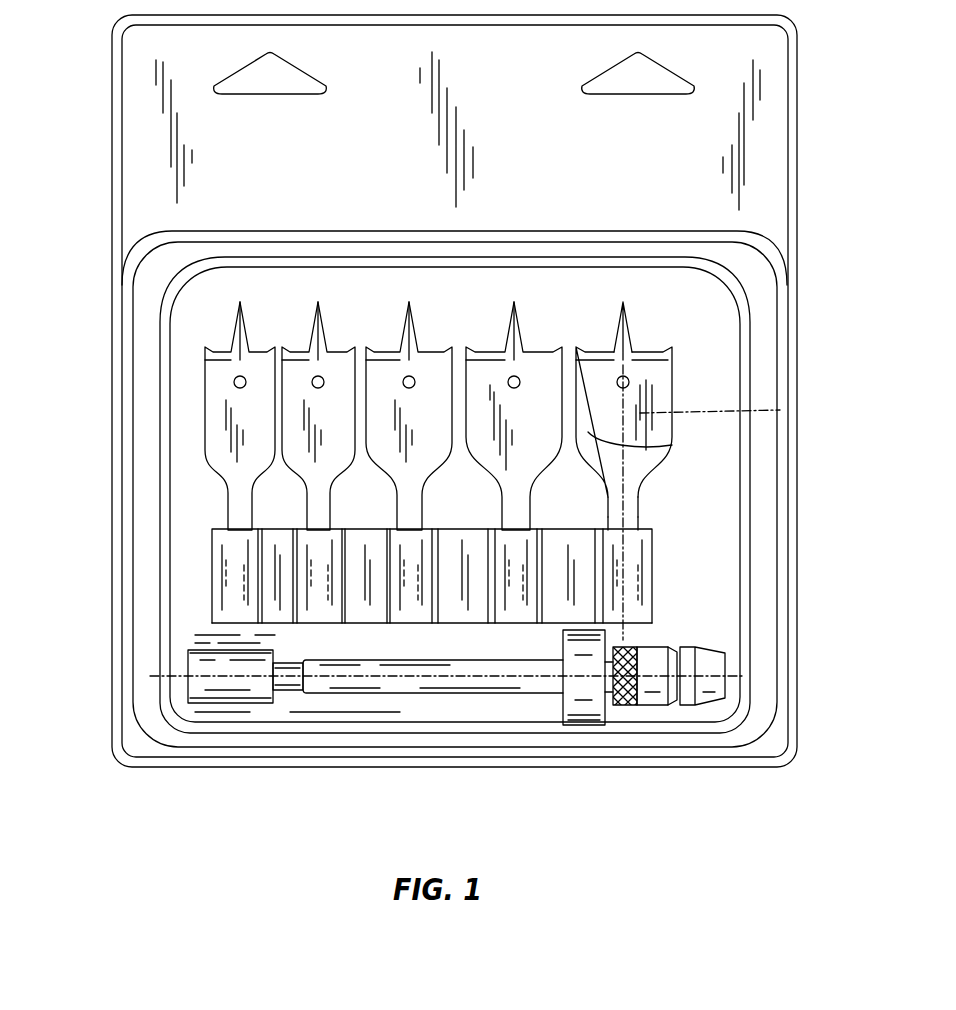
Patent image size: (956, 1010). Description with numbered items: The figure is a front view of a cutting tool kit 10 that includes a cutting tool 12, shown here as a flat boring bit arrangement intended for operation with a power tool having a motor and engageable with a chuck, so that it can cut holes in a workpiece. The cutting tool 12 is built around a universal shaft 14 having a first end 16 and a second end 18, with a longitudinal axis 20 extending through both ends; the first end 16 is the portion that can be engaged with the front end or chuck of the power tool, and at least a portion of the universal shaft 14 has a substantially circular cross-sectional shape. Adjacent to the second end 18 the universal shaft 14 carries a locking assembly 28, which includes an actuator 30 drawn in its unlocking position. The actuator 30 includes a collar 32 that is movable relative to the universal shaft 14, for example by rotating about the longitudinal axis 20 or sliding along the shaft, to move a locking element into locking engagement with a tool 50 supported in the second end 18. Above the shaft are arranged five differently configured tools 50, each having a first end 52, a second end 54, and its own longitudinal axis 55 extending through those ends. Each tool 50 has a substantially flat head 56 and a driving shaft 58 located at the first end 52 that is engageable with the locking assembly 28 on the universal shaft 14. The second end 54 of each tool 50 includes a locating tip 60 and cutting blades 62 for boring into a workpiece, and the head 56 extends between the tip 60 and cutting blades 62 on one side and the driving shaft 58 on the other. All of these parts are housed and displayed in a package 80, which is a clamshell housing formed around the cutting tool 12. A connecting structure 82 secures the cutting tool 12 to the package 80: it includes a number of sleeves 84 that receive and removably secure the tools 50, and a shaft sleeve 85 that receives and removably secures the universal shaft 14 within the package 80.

The cutting tool kit 10 is at (222, 835).
The cutting tool 12 is at (150, 463).
The universal shaft 14 is at (497, 693).
The first end 16 is at (287, 663).
The second end 18 is at (713, 663).
The longitudinal axis 20 is at (473, 677).
The locking assembly 28 is at (728, 687).
The actuator 30 is at (688, 647).
The collar 32 is at (643, 707).
The tool 50 is at (222, 372).
The first end 52 is at (632, 500).
The second end 54 is at (604, 351).
The longitudinal axis 55 is at (780, 410).
The head 56 is at (588, 432).
The driving shaft 58 is at (635, 517).
The locating tip 60 is at (624, 305).
The cutting blades 62 is at (652, 343).
The package 80 is at (357, 248).
The connecting structure 82 is at (527, 637).
The sleeves 84 is at (318, 587).
The shaft sleeve 85 is at (593, 727).